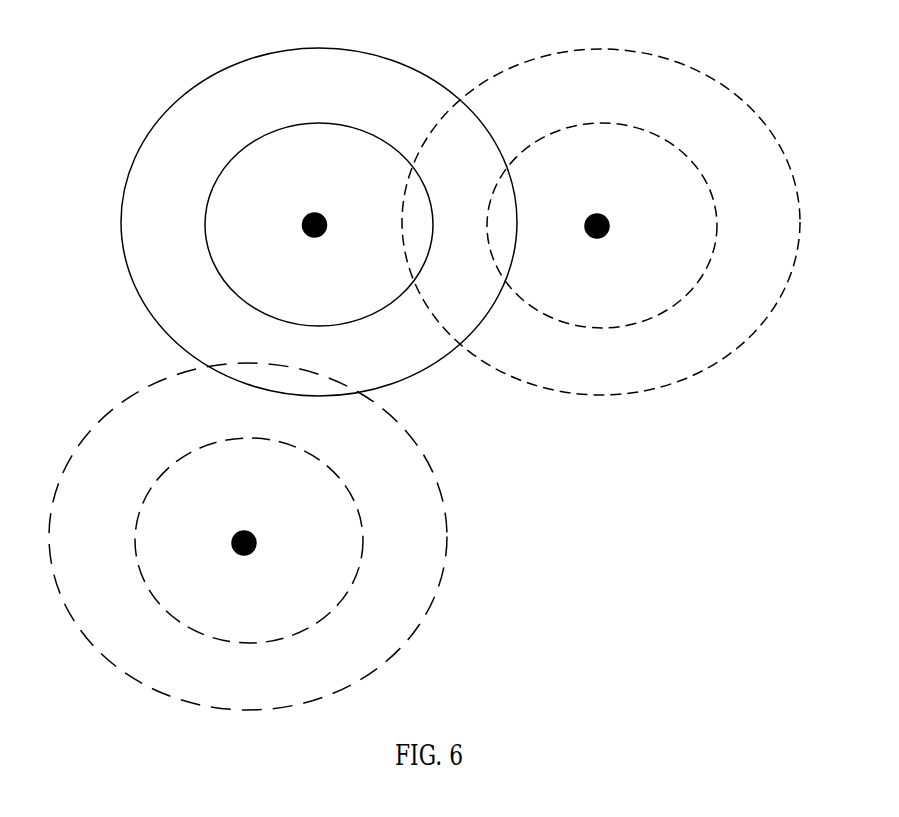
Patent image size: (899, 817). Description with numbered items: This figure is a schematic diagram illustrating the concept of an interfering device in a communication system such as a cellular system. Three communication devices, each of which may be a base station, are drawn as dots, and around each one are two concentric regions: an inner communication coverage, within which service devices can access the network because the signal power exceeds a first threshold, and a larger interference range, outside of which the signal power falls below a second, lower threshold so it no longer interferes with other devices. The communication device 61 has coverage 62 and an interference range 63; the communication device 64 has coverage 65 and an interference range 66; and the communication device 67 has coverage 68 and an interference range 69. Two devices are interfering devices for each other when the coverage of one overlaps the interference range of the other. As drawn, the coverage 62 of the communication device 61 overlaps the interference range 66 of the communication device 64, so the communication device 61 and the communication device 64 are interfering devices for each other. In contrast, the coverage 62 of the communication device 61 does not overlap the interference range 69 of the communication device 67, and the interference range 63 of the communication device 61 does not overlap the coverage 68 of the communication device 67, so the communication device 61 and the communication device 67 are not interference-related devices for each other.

The communication device 61 is at (326, 218).
The coverage 62 is at (347, 124).
The interference range 63 is at (386, 58).
The communication device 64 is at (608, 220).
The coverage 65 is at (696, 165).
The interference range 66 is at (757, 110).
The communication device 67 is at (255, 538).
The coverage 68 is at (343, 481).
The interference range 69 is at (408, 430).